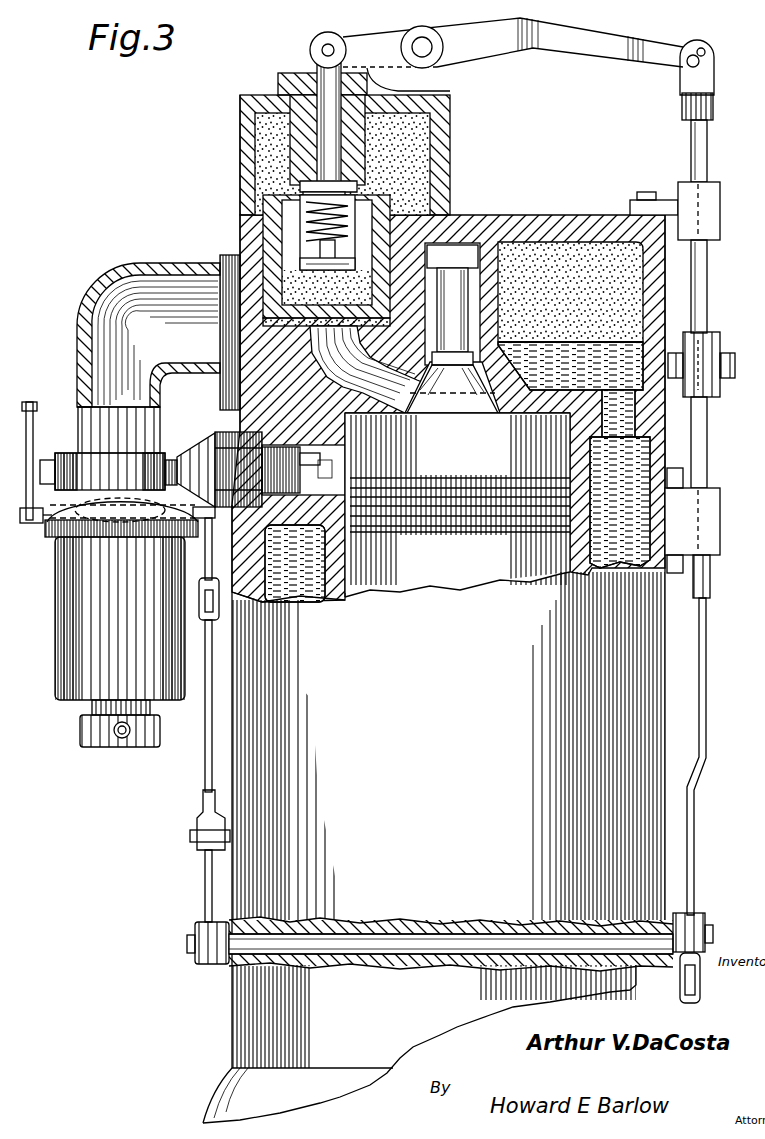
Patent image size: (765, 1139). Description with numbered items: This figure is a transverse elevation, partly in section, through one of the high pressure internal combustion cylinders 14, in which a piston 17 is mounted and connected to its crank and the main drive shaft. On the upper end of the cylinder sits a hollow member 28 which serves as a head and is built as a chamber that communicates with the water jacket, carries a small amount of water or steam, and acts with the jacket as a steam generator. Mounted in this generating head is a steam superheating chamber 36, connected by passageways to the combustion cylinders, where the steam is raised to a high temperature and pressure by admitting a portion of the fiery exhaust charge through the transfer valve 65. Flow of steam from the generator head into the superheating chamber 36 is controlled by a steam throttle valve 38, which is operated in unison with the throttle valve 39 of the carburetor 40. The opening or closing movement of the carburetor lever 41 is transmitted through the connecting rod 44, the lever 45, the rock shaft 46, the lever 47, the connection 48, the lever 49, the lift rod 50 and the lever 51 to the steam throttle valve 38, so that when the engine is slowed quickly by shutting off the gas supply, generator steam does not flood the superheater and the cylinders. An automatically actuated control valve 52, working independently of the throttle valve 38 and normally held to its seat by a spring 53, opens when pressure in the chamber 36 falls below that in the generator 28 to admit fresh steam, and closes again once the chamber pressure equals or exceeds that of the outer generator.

The high pressure internal combustion cylinder 14 is at (468, 463).
The piston 17 is at (440, 568).
The hollow member 28 is at (408, 133).
The steam superheating chamber 36 is at (265, 252).
The steam throttle valve 38 is at (342, 182).
The throttle valve 39 is at (98, 487).
The carburetor 40 is at (80, 620).
The carburetor lever 41 is at (30, 402).
The connecting rod 44 is at (205, 760).
The lever 45 is at (205, 885).
The rock shaft 46 is at (195, 957).
The lever 47 is at (697, 975).
The connection 48 is at (698, 755).
The lever 49 is at (722, 362).
The lift rod 50 is at (707, 298).
The lever 51 is at (570, 47).
The control valve 52 is at (362, 243).
The spring 53 is at (363, 207).
The transfer valve 65 is at (459, 405).